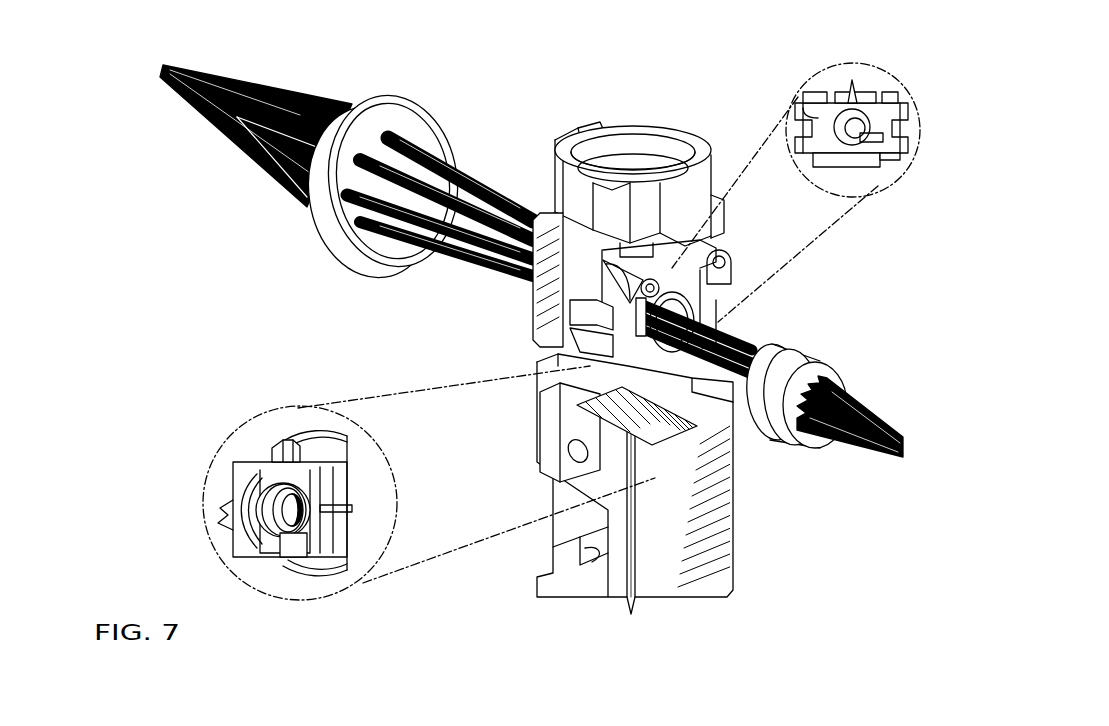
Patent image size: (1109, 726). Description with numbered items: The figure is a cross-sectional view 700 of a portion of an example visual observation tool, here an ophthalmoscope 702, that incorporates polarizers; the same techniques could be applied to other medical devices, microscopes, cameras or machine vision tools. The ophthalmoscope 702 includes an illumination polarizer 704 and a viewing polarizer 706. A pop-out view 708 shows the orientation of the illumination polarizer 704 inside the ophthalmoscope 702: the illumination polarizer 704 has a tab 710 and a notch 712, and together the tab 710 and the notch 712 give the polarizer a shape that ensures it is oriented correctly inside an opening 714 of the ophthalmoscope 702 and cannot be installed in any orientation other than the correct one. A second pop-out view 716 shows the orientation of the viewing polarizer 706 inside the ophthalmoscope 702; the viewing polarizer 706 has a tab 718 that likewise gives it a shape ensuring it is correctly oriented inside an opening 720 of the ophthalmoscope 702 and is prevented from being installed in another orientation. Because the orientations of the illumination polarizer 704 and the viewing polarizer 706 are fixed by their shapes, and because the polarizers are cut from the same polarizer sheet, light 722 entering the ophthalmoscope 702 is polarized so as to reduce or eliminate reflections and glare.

The cross-sectional view 700 is at (122, 66).
The ophthalmoscope 702 is at (576, 96).
The illumination polarizer 704 is at (677, 433).
The viewing polarizer 706 is at (633, 300).
The pop-out view 708 is at (387, 596).
The tab 710 is at (277, 452).
The notch 712 is at (273, 539).
The opening 714 is at (248, 498).
The pop-out view 716 is at (754, 80).
The tab 718 is at (884, 138).
The opening 720 is at (846, 152).
The light 722 is at (462, 268).